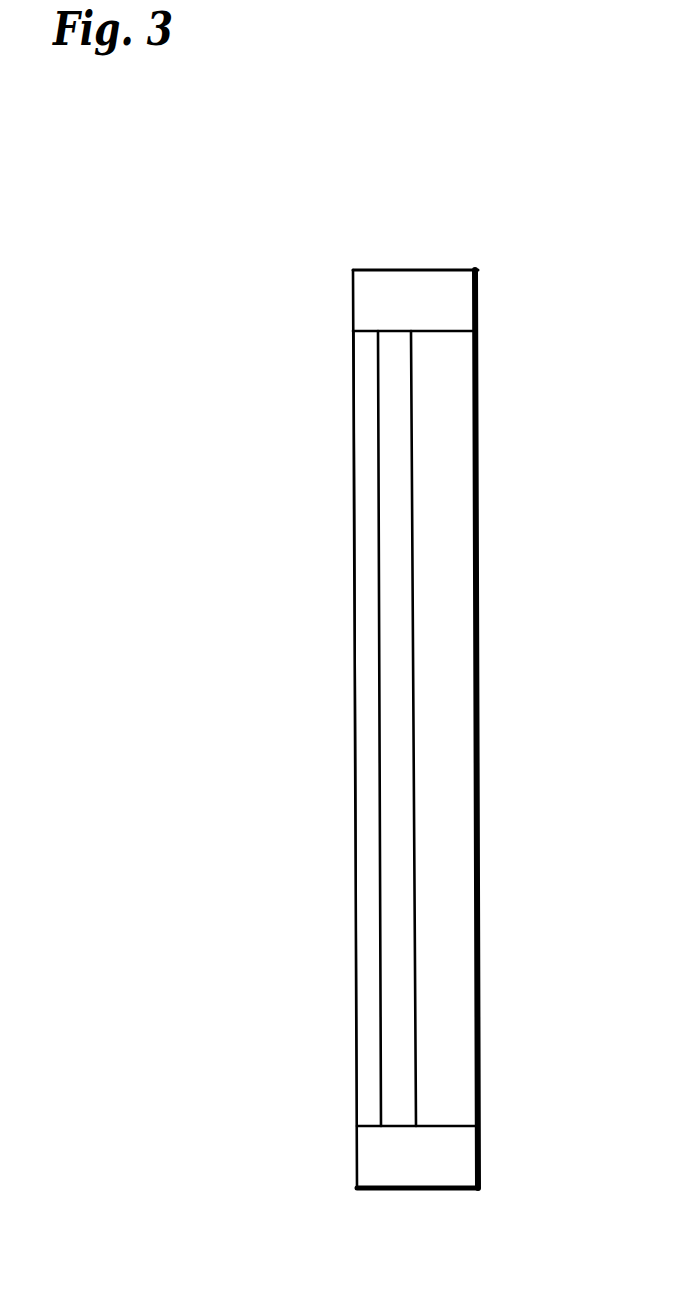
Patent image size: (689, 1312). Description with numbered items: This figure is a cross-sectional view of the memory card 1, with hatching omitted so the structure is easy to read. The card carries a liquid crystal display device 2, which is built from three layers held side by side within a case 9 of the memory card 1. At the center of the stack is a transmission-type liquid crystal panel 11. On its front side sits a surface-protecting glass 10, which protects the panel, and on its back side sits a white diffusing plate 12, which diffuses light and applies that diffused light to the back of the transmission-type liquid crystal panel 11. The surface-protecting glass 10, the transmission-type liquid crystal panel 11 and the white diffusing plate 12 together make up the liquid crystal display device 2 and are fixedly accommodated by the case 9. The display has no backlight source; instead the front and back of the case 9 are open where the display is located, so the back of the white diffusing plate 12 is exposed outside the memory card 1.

The memory card 1 is at (516, 258).
The liquid crystal display device 2 is at (452, 543).
The case 9 is at (458, 299).
The surface-protecting glass 10 is at (362, 530).
The transmission-type liquid crystal panel 11 is at (393, 432).
The white diffusing plate 12 is at (465, 395).